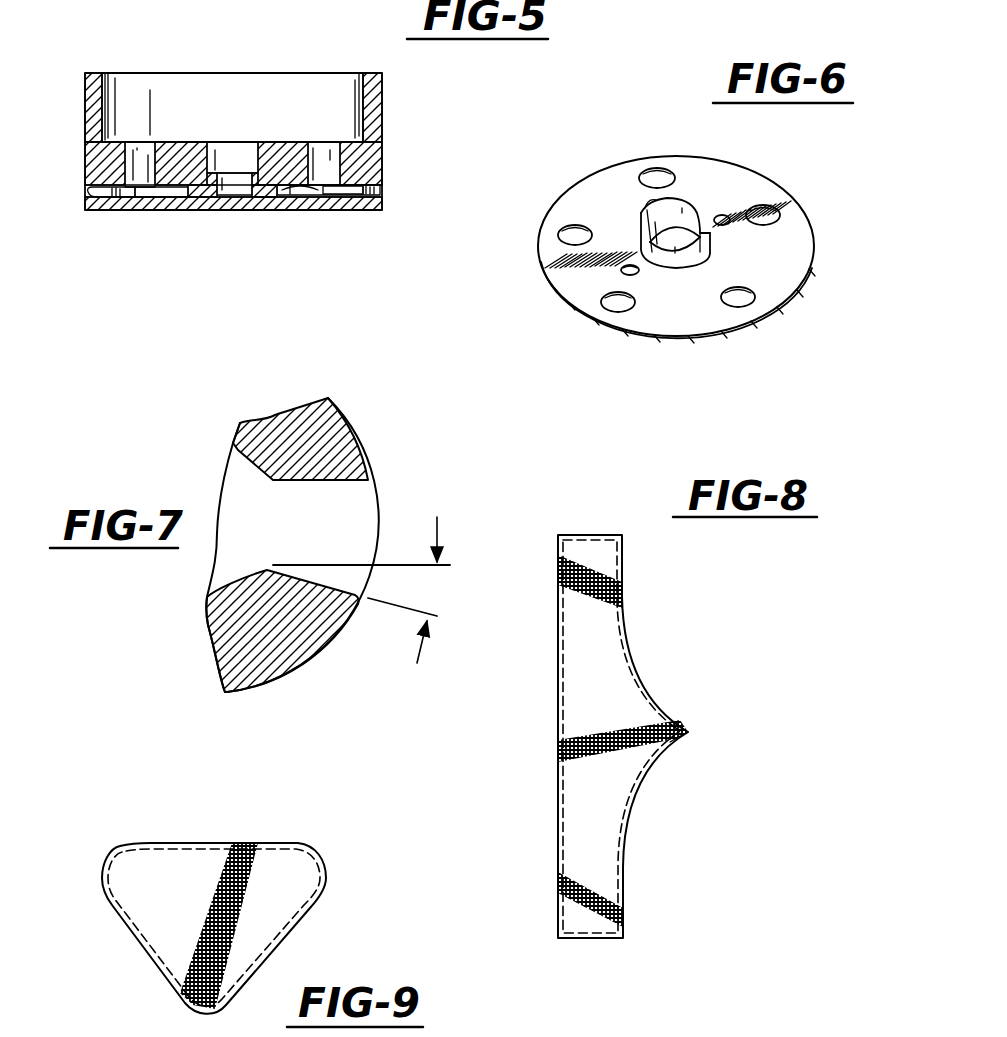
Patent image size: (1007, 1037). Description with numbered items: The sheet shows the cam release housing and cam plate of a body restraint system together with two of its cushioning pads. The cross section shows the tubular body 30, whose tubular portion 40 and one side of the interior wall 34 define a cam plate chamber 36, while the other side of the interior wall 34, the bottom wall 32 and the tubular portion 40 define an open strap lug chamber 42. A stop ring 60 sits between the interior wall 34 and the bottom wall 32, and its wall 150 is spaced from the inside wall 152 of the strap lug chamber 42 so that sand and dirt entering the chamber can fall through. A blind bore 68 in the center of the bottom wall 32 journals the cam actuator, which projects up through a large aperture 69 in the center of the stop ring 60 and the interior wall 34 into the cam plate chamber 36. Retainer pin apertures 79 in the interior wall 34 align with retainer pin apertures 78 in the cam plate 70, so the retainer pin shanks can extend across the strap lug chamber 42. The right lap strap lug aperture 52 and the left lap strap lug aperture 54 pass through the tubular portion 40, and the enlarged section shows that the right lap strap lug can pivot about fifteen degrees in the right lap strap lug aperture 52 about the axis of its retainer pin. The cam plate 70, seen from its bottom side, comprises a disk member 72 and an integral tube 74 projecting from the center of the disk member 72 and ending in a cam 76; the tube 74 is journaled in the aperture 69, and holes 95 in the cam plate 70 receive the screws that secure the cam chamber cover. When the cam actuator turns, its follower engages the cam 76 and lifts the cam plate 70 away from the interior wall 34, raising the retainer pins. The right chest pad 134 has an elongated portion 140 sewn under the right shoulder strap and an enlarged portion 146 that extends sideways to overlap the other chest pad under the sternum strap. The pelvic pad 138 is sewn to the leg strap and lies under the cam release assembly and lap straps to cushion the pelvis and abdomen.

In FIG. 5, the tubular body 30 is at (393, 133).
In FIG. 5, the bottom wall 32 is at (120, 208).
In FIG. 5, the interior wall 34 is at (175, 157).
In FIG. 5, the cam plate chamber 36 is at (290, 90).
In FIG. 5, the tubular portion 40 is at (90, 113).
In FIG. 5, the strap lug chamber 42 is at (173, 197).
In FIG. 5, the right lap strap lug aperture 52 is at (100, 192).
In FIG. 7, the right lap strap lug aperture 52 is at (362, 508).
In FIG. 5, the left lap strap lug aperture 54 is at (382, 192).
In FIG. 5, the stop ring 60 is at (197, 195).
In FIG. 5, the bore 68 is at (230, 180).
In FIG. 5, the aperture 69 is at (222, 147).
In FIG. 5, the retainer pin apertures 79 is at (330, 153).
In FIG. 5, the wall 150 is at (293, 197).
In FIG. 5, the inside wall 152 is at (310, 203).
In FIG. 6, the cam plate 70 is at (651, 257).
In FIG. 6, the disk member 72 is at (590, 298).
In FIG. 6, the integral tube 74 is at (672, 262).
In FIG. 6, the cam 76 is at (682, 193).
In FIG. 6, the retainer pin apertures 78 is at (577, 224).
In FIG. 6, the holes 95 is at (733, 200).
In FIG. 8, the right chest pad 134 is at (695, 736).
In FIG. 8, the elongated portion 140 is at (622, 585).
In FIG. 8, the enlarged portion 146 is at (683, 740).
In FIG. 9, the pelvic pad 138 is at (330, 860).